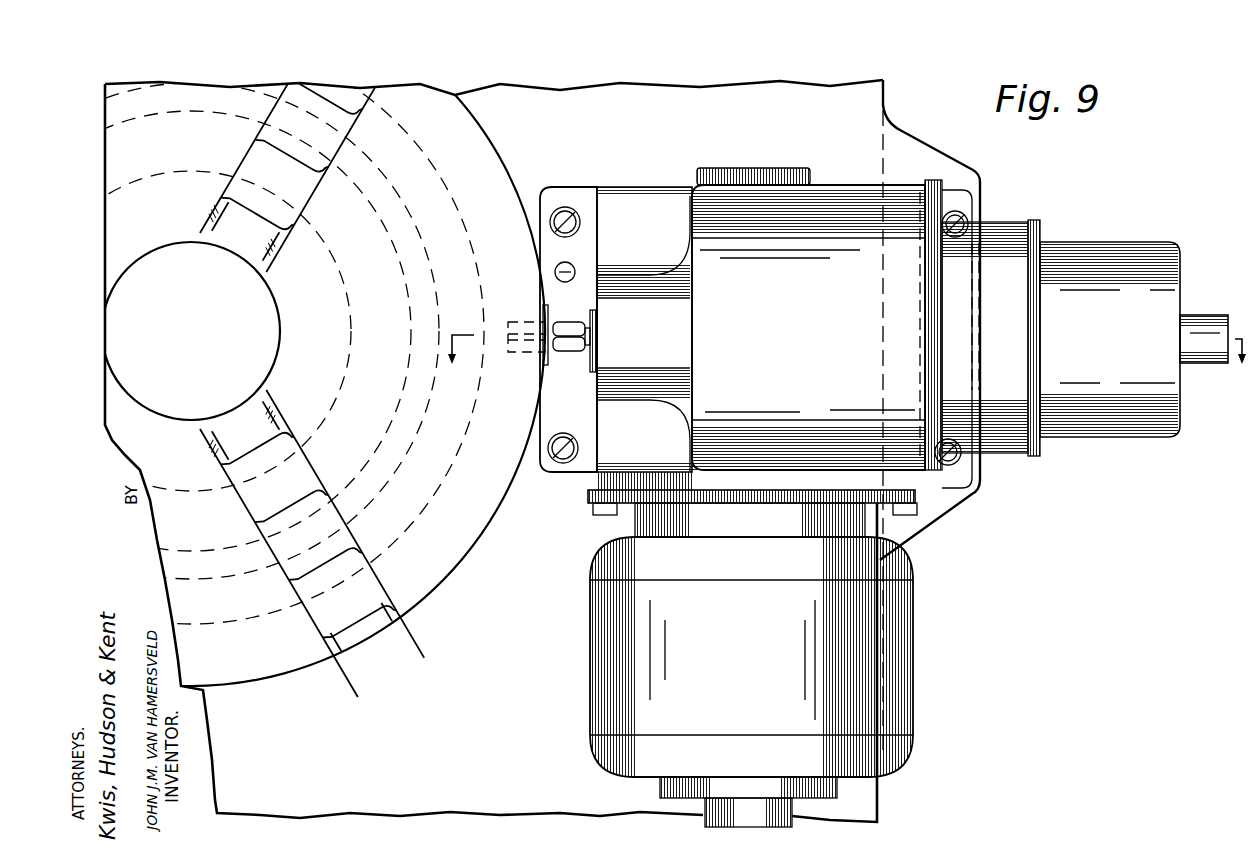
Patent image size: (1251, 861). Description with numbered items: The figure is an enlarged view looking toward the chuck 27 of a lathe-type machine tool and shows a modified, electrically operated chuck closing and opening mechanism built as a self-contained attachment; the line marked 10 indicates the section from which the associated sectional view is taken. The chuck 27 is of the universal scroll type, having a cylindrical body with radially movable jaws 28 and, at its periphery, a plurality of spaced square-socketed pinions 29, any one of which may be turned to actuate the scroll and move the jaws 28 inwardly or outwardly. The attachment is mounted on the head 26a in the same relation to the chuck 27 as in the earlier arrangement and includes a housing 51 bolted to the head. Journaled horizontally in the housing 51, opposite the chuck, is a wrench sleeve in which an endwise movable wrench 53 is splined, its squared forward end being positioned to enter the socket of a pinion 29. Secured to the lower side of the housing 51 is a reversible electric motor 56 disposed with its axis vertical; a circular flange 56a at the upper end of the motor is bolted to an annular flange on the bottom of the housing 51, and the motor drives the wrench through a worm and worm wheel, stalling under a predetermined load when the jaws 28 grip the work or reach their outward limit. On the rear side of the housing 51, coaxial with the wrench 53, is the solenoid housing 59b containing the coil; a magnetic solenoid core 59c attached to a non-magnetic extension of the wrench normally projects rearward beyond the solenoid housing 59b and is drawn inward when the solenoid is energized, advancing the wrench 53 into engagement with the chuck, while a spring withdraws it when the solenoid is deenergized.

The section line indicator 10 is at (842, 364).
The head 26a is at (900, 130).
The chuck 27 is at (452, 547).
The jaws 28 is at (302, 487).
The square-socketed pinions 29 is at (548, 320).
The housing 51 is at (640, 195).
The wrench 53 is at (570, 352).
The electric motor 56 is at (908, 640).
The circular flange 56a is at (590, 498).
The solenoid housing 59b is at (1103, 247).
The solenoid core 59c is at (1197, 320).